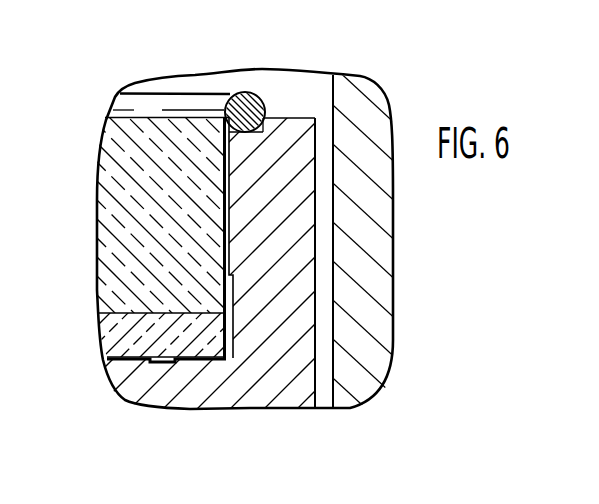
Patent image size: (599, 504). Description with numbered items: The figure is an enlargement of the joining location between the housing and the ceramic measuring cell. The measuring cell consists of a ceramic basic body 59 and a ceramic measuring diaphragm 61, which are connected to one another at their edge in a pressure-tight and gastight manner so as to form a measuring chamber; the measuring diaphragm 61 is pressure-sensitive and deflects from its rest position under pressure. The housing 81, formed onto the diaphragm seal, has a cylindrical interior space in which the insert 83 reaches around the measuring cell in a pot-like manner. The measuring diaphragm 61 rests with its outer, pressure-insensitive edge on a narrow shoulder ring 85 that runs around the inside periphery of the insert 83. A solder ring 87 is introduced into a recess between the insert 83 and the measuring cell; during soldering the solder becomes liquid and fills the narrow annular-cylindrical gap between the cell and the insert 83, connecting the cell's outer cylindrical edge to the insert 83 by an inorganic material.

The basic body 59 is at (117, 219).
The measuring diaphragm 61 is at (118, 340).
The housing 81 is at (376, 267).
The insert 83 is at (292, 328).
The shoulder ring 85 is at (162, 364).
The solder ring 87 is at (250, 98).